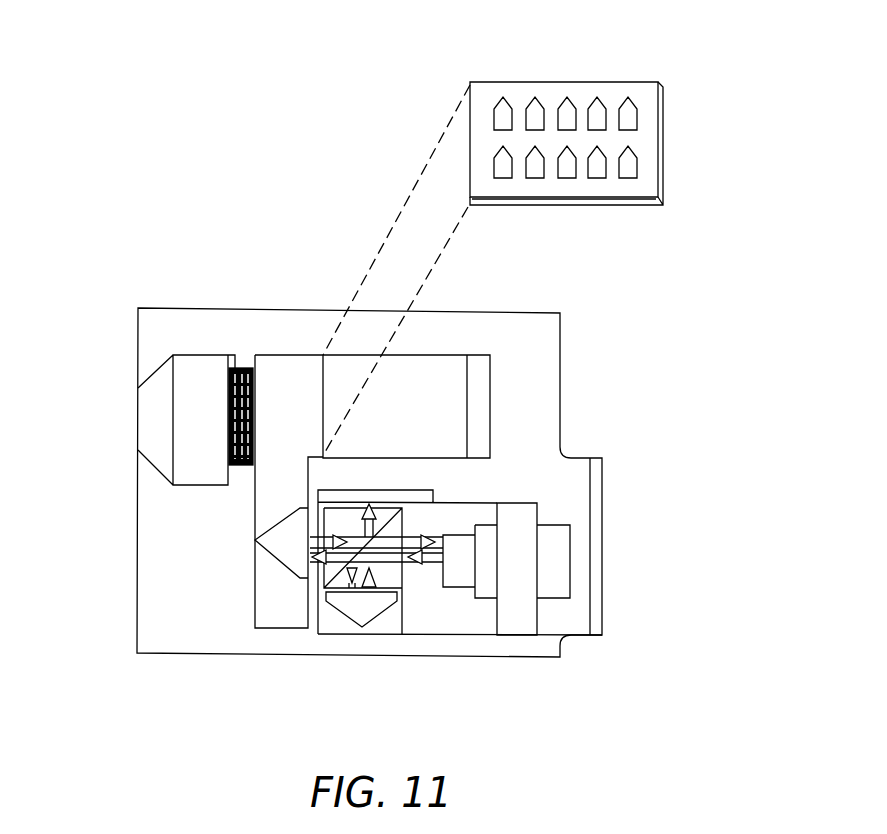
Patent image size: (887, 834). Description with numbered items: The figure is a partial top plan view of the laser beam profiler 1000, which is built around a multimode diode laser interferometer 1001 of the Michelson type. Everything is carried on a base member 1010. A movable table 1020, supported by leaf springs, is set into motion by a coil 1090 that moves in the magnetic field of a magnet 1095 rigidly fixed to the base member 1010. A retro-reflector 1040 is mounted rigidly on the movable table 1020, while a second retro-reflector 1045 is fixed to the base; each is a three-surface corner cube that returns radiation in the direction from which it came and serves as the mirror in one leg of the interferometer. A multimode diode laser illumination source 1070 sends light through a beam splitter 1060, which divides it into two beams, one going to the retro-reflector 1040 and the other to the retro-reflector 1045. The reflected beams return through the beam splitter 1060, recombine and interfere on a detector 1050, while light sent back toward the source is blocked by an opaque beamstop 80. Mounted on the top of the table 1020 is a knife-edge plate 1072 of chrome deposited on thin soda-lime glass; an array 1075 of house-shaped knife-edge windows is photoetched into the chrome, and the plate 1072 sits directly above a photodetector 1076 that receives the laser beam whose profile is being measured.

The laser beam profiler 1000 is at (347, 461).
The multimode diode laser interferometer 1001 is at (440, 645).
The base member 1010 is at (135, 565).
The movable table 1020 is at (492, 403).
The retro-reflector 1040 is at (253, 543).
The retro-reflector 1045 is at (360, 633).
The detector 1050 is at (325, 487).
The beam splitter 1060 is at (407, 520).
The opaque beamstop 80 is at (433, 536).
The multimode diode laser illumination source 1070 is at (488, 600).
The knife-edge plate 1072 is at (660, 145).
The array of knife-edge patterns 1075 is at (608, 96).
The photodetector 1076 is at (607, 205).
The coil 1090 is at (238, 472).
The magnet 1095 is at (145, 415).